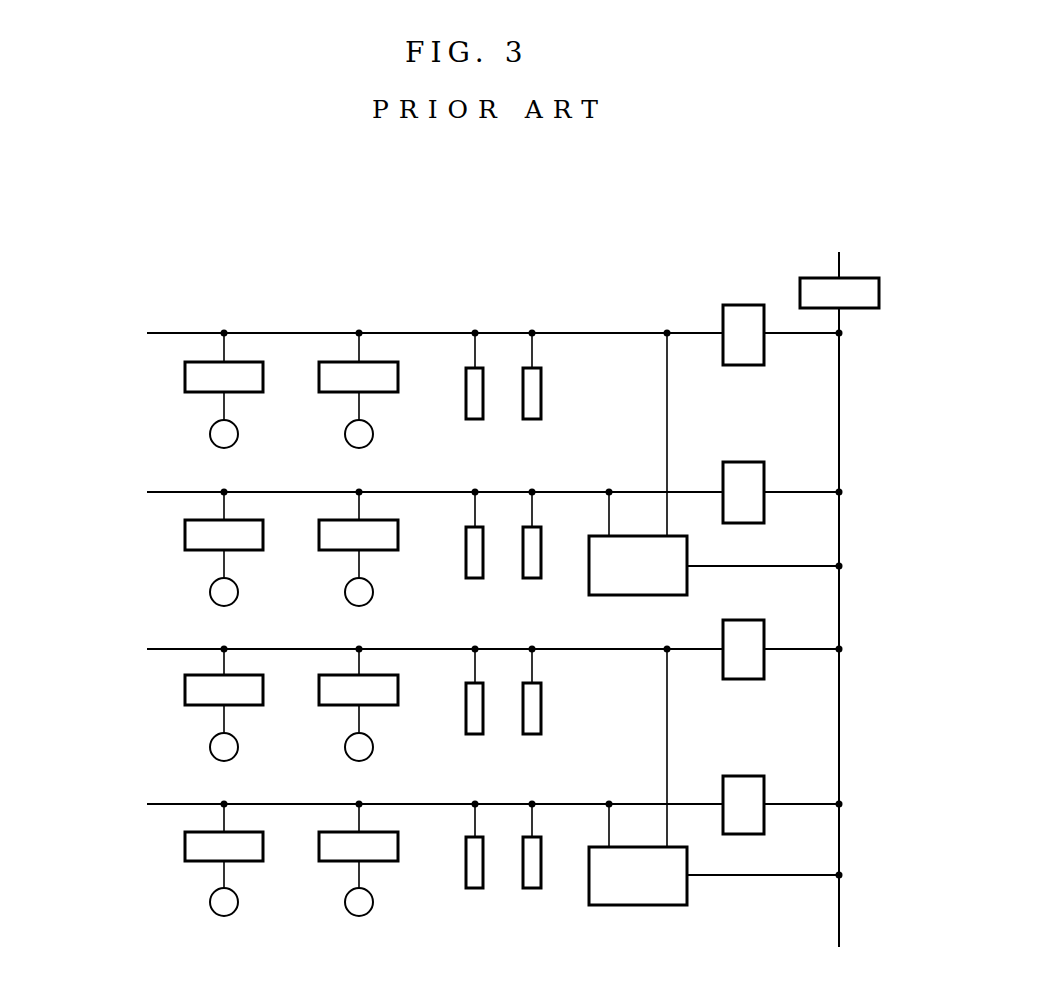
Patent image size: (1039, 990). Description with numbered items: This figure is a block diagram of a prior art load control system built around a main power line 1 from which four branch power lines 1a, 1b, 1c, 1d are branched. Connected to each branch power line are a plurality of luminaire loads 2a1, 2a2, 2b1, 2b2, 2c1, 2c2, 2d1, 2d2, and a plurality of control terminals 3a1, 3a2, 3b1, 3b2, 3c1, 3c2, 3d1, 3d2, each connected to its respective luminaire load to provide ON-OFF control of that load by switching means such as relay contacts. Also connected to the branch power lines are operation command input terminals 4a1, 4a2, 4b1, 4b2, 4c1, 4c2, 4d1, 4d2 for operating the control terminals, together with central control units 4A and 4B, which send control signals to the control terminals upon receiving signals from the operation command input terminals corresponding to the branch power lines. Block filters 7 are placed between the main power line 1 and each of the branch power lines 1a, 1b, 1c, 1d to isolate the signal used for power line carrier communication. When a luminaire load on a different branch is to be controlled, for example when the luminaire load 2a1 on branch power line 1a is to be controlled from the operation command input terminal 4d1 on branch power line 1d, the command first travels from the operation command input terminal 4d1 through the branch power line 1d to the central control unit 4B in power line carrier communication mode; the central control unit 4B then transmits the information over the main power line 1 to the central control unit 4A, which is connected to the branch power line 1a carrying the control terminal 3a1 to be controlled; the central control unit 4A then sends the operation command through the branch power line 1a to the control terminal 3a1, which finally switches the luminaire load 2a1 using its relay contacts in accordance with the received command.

The main power line 1 is at (842, 398).
The branch power line 1a is at (588, 333).
The branch power line 1b is at (580, 492).
The branch power line 1c is at (568, 649).
The branch power line 1d is at (580, 804).
The luminaire load 2a1 is at (210, 435).
The luminaire load 2a2 is at (345, 435).
The luminaire load 2b1 is at (210, 593).
The luminaire load 2b2 is at (345, 590).
The luminaire load 2c1 is at (210, 748).
The luminaire load 2c2 is at (347, 753).
The luminaire load 2d1 is at (210, 900).
The luminaire load 2d2 is at (345, 902).
The control terminal 3a1 is at (185, 377).
The control terminal 3a2 is at (319, 378).
The control terminal 3b1 is at (185, 536).
The control terminal 3b2 is at (319, 537).
The control terminal 3c1 is at (185, 688).
The control terminal 3c2 is at (319, 692).
The control terminal 3d1 is at (185, 847).
The control terminal 3d2 is at (319, 847).
The operation command input terminal 4a1 is at (466, 393).
The operation command input terminal 4a2 is at (541, 400).
The operation command input terminal 4b1 is at (466, 555).
The operation command input terminal 4b2 is at (524, 556).
The operation command input terminal 4c1 is at (466, 708).
The operation command input terminal 4c2 is at (523, 715).
The operation command input terminal 4d1 is at (466, 877).
The operation command input terminal 4d2 is at (527, 889).
The central control unit 4A is at (643, 595).
The central control unit 4B is at (632, 907).
The block filter 7 is at (735, 305).